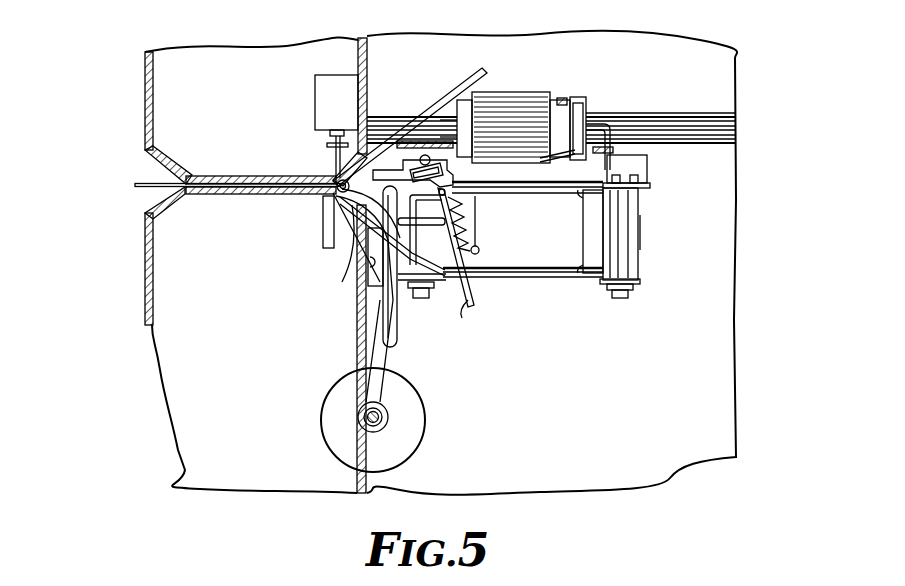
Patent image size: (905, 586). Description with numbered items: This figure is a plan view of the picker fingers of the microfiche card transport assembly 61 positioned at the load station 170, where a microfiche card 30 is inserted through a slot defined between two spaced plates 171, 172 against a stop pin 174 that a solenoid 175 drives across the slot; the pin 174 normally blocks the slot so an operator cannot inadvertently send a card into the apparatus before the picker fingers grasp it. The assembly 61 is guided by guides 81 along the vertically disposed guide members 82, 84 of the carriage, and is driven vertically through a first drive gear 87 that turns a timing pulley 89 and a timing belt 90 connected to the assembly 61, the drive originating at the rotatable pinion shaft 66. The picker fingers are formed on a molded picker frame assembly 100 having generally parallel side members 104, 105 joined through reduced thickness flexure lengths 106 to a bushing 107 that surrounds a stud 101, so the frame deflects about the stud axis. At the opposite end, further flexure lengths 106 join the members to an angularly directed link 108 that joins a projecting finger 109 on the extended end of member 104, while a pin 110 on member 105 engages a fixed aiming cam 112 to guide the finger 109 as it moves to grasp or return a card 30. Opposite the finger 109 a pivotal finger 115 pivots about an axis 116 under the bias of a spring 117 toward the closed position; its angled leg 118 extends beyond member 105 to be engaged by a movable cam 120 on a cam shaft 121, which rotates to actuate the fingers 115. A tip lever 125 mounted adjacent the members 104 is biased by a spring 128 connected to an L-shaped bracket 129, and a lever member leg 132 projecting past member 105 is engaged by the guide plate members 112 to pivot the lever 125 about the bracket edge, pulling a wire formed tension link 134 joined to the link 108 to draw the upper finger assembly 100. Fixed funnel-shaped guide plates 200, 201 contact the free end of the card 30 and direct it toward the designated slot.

The microfiche card 30 is at (265, 177).
The microfiche card transport assembly 61 is at (652, 229).
The pinion shaft 66 is at (708, 126).
The guides 81 is at (393, 140).
The guide member 82 is at (599, 146).
The guide member 84 is at (433, 140).
The first drive gear 87 is at (505, 98).
The timing pulley 89 is at (577, 100).
The timing belt 90 is at (562, 97).
The picker frame assembly 100 is at (579, 288).
The stud 101 is at (617, 296).
The side member 104 is at (518, 190).
The side member 105 is at (543, 282).
The reduced thickness flexure lengths 106 is at (593, 266).
The bushing 107 is at (639, 252).
The angularly directed link 108 is at (382, 290).
The projecting finger 109 is at (376, 167).
The pin 110 is at (430, 295).
The aiming cam 112 is at (452, 258).
The pivotal finger 115 is at (345, 252).
The axis 116 is at (328, 196).
The spring 117 is at (372, 262).
The leg 118 is at (396, 330).
The movable cam 120 is at (375, 351).
The cam shaft 121 is at (380, 420).
The tip lever 125 is at (418, 170).
The spring 128 is at (479, 250).
The L-shaped bracket 129 is at (477, 210).
The leg 132 is at (472, 298).
The tension link 134 is at (448, 290).
The load station 170 is at (140, 141).
The plate 171 is at (208, 175).
The plate 172 is at (222, 196).
The stop pin 174 is at (333, 155).
The solenoid 175 is at (322, 90).
The guide plate 200 is at (486, 68).
The guide plate 201 is at (472, 292).